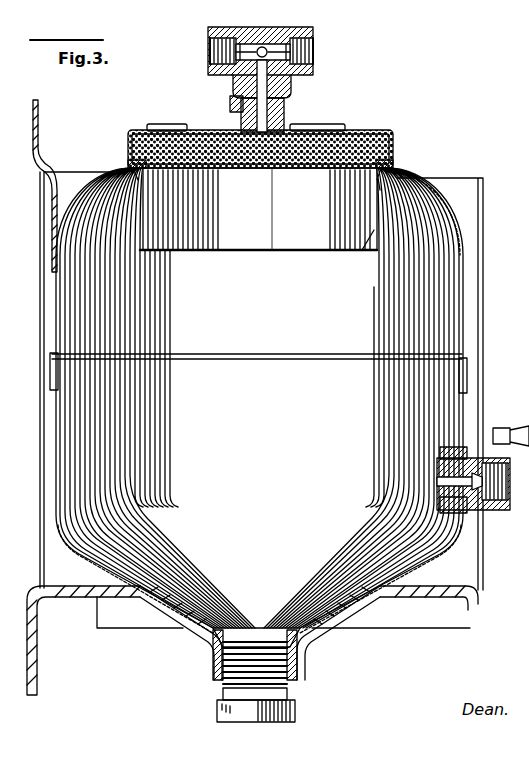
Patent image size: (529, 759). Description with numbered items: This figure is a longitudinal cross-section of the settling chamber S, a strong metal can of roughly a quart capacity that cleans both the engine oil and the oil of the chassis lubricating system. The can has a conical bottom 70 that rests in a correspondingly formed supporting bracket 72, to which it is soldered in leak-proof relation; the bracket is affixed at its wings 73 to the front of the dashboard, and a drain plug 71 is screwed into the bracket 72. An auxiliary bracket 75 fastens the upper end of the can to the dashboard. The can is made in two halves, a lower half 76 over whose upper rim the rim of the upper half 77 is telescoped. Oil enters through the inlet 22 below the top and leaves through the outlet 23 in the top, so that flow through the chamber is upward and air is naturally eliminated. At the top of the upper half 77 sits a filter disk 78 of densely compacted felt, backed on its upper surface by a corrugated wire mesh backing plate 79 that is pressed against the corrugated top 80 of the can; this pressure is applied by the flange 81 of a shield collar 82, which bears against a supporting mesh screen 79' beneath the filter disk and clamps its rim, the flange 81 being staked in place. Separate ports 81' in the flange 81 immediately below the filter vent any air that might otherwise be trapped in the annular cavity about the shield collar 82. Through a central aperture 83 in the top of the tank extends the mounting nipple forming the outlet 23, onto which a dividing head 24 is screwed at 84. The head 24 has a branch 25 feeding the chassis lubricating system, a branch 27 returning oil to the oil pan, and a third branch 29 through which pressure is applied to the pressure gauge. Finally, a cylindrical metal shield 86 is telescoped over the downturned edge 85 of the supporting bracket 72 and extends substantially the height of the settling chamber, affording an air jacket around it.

The inlet 22 is at (462, 513).
The outlet 23 is at (293, 107).
The dividing head 24 is at (267, 37).
The branch 25 is at (313, 45).
The branch 27 is at (210, 47).
The third branch 29 is at (260, 47).
The conical bottom 70 is at (333, 598).
The drain plug 71 is at (267, 722).
The supporting bracket 72 is at (355, 617).
The wings 73 is at (38, 630).
The auxiliary bracket 75 is at (40, 157).
The lower half 76 is at (461, 407).
The upper half 77 is at (456, 222).
The filter disk 78 is at (397, 147).
The corrugated wire mesh backing plate 79 is at (280, 207).
The supporting mesh screen 79' is at (258, 207).
The corrugated top 80 is at (343, 131).
The flange 81 is at (263, 160).
The ports 81' is at (254, 172).
The shield collar 82 is at (366, 232).
The central aperture 83 is at (235, 110).
The screw connection 84 is at (288, 88).
The downturned edge 85 is at (130, 617).
The cylindrical metal shield 86 is at (484, 325).
The settling chamber S is at (437, 383).